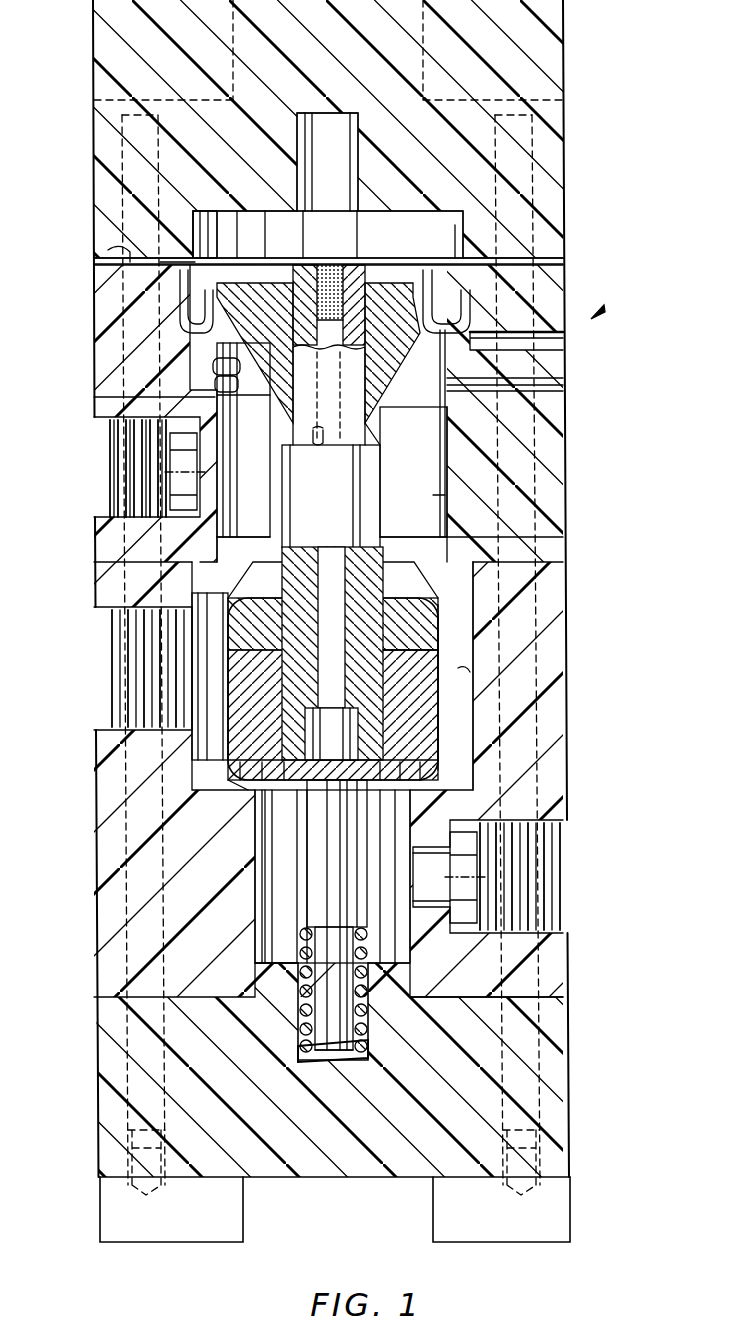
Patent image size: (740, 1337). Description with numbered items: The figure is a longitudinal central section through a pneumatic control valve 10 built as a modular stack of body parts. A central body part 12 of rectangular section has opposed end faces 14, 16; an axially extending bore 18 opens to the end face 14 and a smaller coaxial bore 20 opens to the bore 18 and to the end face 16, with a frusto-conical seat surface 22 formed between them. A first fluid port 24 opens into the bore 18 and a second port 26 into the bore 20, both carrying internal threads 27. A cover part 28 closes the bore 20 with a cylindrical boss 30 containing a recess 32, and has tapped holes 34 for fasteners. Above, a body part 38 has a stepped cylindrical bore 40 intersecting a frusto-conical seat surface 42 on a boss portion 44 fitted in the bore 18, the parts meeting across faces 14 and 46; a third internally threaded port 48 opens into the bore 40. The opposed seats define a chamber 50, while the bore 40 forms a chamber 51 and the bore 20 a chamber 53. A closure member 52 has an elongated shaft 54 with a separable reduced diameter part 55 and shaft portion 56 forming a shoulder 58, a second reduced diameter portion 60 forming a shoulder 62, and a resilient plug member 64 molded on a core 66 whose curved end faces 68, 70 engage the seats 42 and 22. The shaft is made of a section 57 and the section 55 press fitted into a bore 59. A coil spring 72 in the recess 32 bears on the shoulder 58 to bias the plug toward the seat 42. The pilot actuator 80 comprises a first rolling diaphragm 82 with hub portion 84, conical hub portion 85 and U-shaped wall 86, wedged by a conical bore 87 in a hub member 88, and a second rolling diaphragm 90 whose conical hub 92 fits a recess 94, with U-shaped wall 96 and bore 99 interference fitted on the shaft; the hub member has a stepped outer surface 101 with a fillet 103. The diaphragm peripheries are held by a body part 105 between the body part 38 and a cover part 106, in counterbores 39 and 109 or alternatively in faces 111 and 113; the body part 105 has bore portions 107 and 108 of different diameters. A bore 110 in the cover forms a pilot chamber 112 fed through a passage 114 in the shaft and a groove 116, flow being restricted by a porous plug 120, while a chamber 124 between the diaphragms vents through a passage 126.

The pneumatic control valve 10 is at (605, 312).
The central body part 12 is at (565, 655).
The end face 14 is at (563, 537).
The end face 16 is at (560, 1000).
The axially extending bore 18 is at (472, 672).
The coaxial bore 20 is at (418, 830).
The frusto-conical seat surface 22 is at (448, 768).
The first fluid port 24 is at (118, 627).
The second port 26 is at (568, 933).
The internal threads 27 is at (120, 706).
The cap or cover part 28 is at (575, 1072).
The cylindrical boss 30 is at (266, 942).
The cylindrical recess 32 is at (303, 1016).
The tapped holes 34 is at (110, 1073).
The body part 38 is at (556, 447).
The shallow counterbore 39 is at (563, 387).
The stepped cylindrical bore 40 is at (435, 497).
The frusto-conical seat surface 42 is at (397, 537).
The cylindrical boss portion 44 is at (472, 606).
The face 46 is at (522, 568).
The third internally threaded fluid port 48 is at (105, 505).
The chamber 50 is at (205, 672).
The chamber 51 is at (258, 478).
The closure member 52 is at (440, 701).
The chamber 53 is at (374, 874).
The elongated shaft 54 is at (253, 510).
The separable reduced diameter part 55 is at (300, 877).
The reduced diameter shaft portion 56 is at (348, 1056).
The shaft section 57 is at (370, 496).
The shoulder 58 is at (335, 930).
The bore 59 is at (238, 770).
The second reduced diameter portion 60 is at (273, 483).
The shoulder 62 is at (325, 465).
The cylindrical plug member 64 is at (438, 637).
The cylindrical core or hub 66 is at (443, 735).
The curved end face 68 is at (206, 570).
The curved end face 70 is at (262, 836).
The coil spring 72 is at (372, 1052).
The pilot pressure fluid actuator 80 is at (412, 258).
The first flexible cylindrical rolling diaphragm 82 is at (445, 410).
The hub portion 84 is at (415, 432).
The conical diaphragm hub portion 85 is at (318, 360).
The annular wall portion 86 is at (495, 380).
The conical bore 87 is at (372, 450).
The hub member 88 is at (470, 322).
The second flexible rolling diaphragm 90 is at (455, 215).
The hub portion 92 is at (292, 268).
The conical bore or recess 94 is at (267, 277).
The annular U shaped wall portion 96 is at (185, 330).
The bore 99 is at (337, 258).
The stepped cylindrical outer surface 101 is at (213, 384).
The circumferential fillet 103 is at (210, 360).
The body part 105 is at (108, 318).
The cover part 106 is at (557, 165).
The first cylindrical bore portion 107 is at (212, 410).
The second cylindrical bore portion 108 is at (190, 255).
The shallow counterbore 109 is at (560, 263).
The bore 110 is at (215, 211).
The face 111 is at (105, 248).
The pilot pressure fluid chamber 112 is at (350, 242).
The face 113 is at (120, 398).
The passage 114 is at (330, 540).
The groove 116 is at (333, 818).
The plug 120 is at (345, 255).
The chamber 124 is at (205, 255).
The passage 126 is at (556, 347).